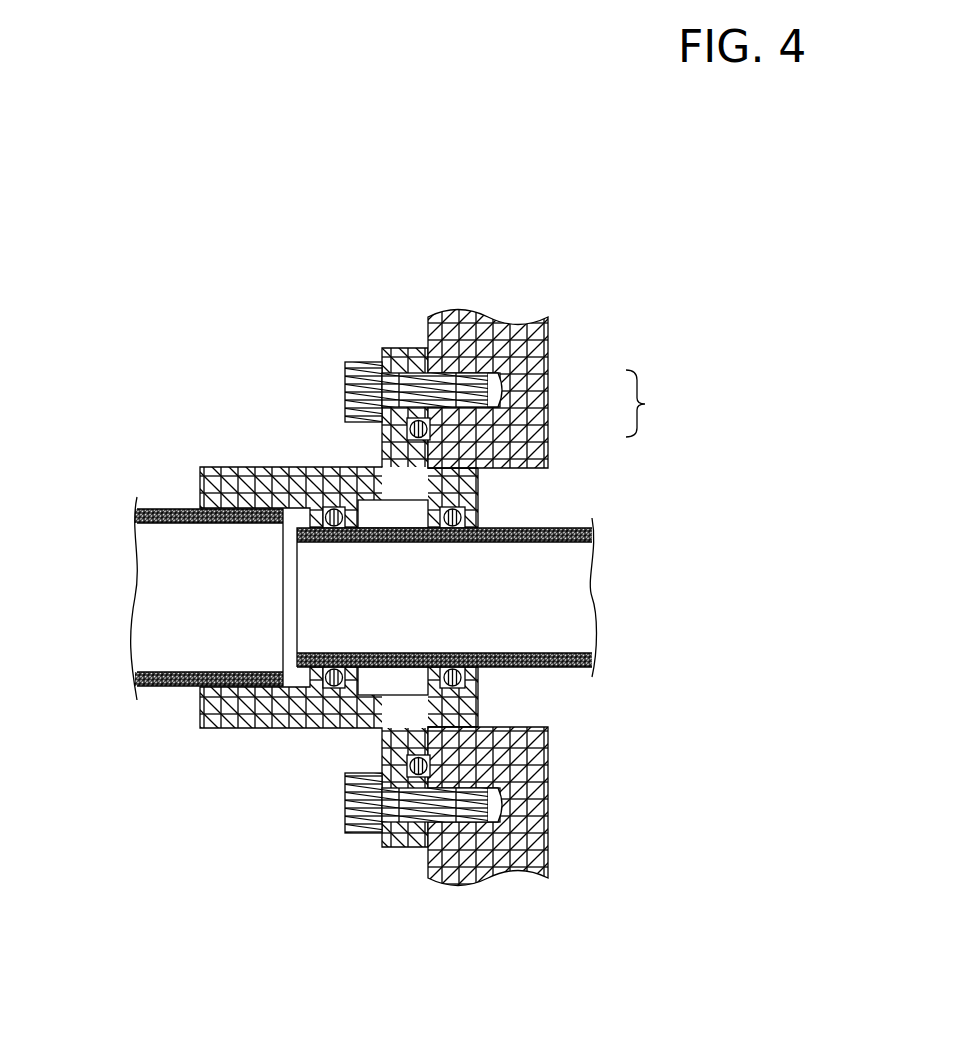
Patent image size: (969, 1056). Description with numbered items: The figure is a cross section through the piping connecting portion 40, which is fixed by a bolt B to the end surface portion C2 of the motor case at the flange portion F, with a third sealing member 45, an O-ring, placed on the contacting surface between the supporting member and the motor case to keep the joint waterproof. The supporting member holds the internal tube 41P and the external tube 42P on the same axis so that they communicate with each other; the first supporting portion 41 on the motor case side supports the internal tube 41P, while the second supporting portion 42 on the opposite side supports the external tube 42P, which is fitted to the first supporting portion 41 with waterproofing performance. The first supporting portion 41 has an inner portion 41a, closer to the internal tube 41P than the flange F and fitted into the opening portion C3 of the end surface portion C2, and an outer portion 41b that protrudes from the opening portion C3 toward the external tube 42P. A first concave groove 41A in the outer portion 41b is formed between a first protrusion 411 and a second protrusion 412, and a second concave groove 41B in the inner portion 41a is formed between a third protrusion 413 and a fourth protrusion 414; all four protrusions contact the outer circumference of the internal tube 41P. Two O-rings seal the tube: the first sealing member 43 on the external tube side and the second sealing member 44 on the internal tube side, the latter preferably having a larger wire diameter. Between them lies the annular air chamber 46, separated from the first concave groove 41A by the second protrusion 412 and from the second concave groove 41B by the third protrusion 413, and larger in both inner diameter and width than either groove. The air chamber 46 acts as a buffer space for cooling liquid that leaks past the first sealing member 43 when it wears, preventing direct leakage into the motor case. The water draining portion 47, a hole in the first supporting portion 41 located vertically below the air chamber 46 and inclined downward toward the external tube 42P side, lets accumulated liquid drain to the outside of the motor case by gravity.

The piping connecting portion 40 is at (283, 423).
The first supporting portion 41 is at (441, 537).
The inner portion 41a is at (362, 483).
The outer portion 41b is at (440, 437).
The first concave groove 41A is at (335, 687).
The second concave groove 41B is at (455, 485).
The internal tube 41P is at (513, 580).
The second supporting portion 42 is at (200, 482).
The external tube 42P is at (187, 580).
The first sealing member 43 is at (333, 506).
The second sealing member 44 is at (455, 512).
The third sealing member 45 is at (410, 420).
The air chamber 46 is at (403, 683).
The water draining portion 47 is at (380, 708).
The first protrusion 411 is at (312, 690).
The second protrusion 412 is at (357, 697).
The third protrusion 413 is at (462, 652).
The fourth protrusion 414 is at (477, 681).
The bolt B is at (358, 383).
The flange portion F is at (403, 363).
The end surface portion C2 is at (525, 343).
The opening portion C3 is at (500, 473).